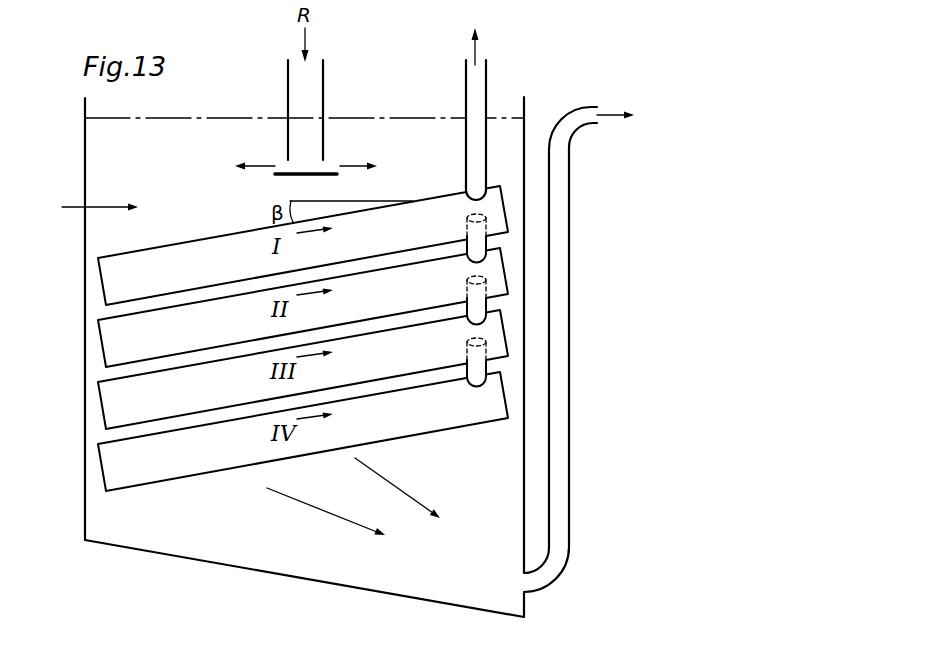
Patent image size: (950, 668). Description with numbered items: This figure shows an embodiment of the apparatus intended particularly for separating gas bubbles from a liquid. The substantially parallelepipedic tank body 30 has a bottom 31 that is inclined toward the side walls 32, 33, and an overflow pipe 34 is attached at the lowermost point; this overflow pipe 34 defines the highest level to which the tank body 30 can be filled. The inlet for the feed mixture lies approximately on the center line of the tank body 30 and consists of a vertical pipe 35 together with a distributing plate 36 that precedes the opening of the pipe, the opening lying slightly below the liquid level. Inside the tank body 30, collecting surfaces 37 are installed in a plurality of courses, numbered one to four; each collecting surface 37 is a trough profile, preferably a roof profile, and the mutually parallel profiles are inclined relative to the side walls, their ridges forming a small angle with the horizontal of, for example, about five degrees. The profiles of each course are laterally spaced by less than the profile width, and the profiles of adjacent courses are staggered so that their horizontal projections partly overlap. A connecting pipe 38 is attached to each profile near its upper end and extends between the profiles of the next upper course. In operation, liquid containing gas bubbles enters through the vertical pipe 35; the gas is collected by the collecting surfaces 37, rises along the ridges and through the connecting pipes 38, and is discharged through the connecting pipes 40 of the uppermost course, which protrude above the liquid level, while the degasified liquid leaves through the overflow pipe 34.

The tank body 30 is at (89, 207).
The bottom 31 is at (222, 565).
The side wall 32 is at (85, 303).
The side wall 33 is at (526, 457).
The overflow pipe 34 is at (560, 528).
The vertical pipe 35 is at (312, 85).
The distributing plate 36 is at (320, 172).
The collecting surfaces 37 is at (149, 291).
The connecting pipe 38 is at (488, 244).
The connecting pipes of the uppermost course 40 is at (475, 92).